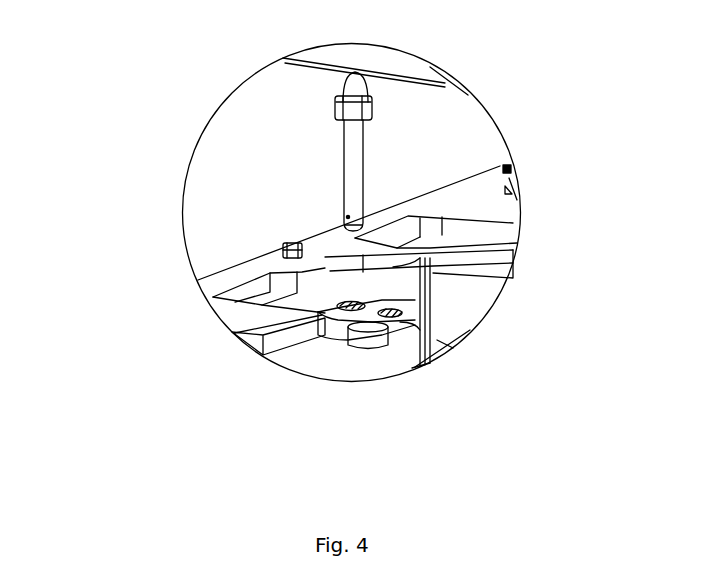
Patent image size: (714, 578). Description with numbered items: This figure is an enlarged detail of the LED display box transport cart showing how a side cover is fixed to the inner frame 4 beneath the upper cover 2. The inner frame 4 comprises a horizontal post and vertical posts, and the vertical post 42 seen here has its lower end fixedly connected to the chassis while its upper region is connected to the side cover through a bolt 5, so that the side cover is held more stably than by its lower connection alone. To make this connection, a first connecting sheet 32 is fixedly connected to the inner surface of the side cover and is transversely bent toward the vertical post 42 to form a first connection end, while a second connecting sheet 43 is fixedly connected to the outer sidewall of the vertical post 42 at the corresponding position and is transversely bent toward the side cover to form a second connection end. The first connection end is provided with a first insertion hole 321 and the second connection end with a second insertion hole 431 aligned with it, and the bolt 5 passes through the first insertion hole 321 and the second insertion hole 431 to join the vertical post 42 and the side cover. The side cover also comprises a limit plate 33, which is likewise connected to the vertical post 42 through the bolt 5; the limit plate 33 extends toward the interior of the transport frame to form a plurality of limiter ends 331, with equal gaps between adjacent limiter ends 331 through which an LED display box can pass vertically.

The upper cover 2 is at (442, 55).
The bolt 5 is at (476, 151).
The inner frame 4 is at (416, 266).
The limiter end 331 is at (234, 172).
The limit plate 33 is at (182, 259).
The first connecting sheet 32 is at (393, 367).
The first insertion hole 321 is at (308, 409).
The second connecting sheet 43 is at (488, 338).
The vertical post 42 is at (459, 402).
The second insertion hole 431 is at (408, 425).